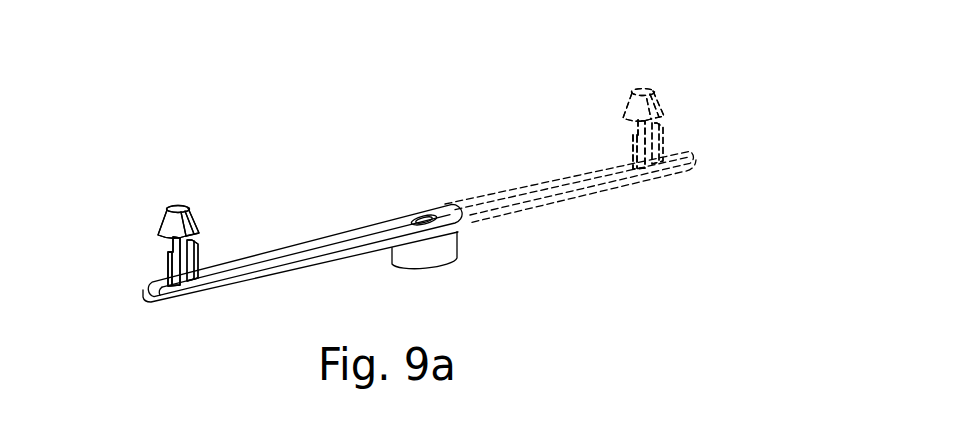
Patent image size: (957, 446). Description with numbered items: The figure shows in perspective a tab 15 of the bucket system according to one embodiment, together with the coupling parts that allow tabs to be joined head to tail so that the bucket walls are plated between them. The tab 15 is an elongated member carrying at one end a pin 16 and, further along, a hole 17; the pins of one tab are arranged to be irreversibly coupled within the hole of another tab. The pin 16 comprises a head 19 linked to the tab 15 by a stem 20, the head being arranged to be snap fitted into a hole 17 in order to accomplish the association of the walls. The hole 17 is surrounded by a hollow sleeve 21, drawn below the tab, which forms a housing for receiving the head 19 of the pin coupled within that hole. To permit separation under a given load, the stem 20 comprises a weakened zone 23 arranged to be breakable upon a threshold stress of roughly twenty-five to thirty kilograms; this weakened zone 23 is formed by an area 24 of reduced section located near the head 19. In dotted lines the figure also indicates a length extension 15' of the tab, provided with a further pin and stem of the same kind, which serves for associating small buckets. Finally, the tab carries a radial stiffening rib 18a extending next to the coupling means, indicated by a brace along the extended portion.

The tab 15 is at (302, 192).
The length extension 15' is at (570, 138).
The pin 16 is at (168, 222).
The head 19 is at (168, 222).
The hole 17 is at (421, 216).
The weakened zone 23 is at (196, 242).
The area of reduced section 24 is at (196, 242).
The stem 20 is at (167, 258).
The hollow sleeve 21 is at (445, 252).
The radial stiffening rib 18a is at (671, 179).